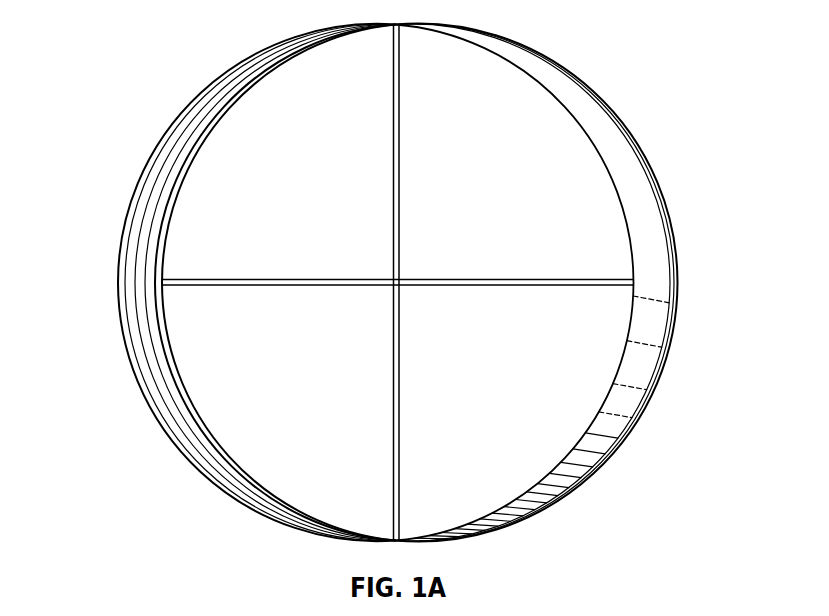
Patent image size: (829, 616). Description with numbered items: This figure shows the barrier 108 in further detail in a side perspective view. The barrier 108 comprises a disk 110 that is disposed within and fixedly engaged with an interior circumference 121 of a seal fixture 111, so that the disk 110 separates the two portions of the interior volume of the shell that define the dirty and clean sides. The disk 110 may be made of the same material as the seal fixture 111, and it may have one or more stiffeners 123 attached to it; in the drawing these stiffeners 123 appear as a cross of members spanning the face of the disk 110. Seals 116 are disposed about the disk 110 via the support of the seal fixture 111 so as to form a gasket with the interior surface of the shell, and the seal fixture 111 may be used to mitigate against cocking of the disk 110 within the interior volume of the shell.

The barrier 108 is at (151, 34).
The disk 110 is at (337, 210).
The seal fixture 111 is at (650, 397).
The seals 116 is at (203, 453).
The interior circumference 121 is at (641, 229).
The stiffeners 123 is at (400, 185).